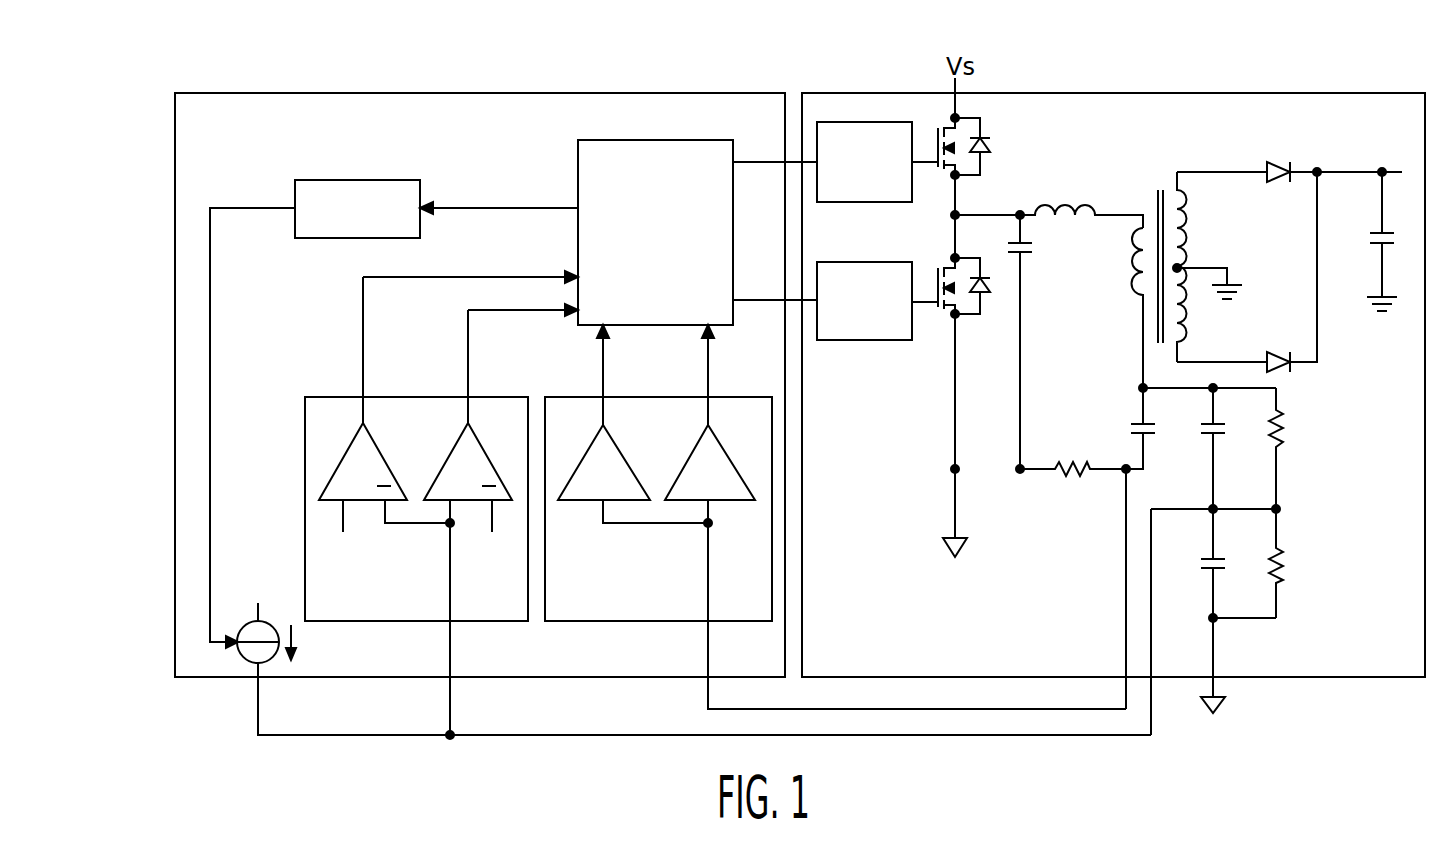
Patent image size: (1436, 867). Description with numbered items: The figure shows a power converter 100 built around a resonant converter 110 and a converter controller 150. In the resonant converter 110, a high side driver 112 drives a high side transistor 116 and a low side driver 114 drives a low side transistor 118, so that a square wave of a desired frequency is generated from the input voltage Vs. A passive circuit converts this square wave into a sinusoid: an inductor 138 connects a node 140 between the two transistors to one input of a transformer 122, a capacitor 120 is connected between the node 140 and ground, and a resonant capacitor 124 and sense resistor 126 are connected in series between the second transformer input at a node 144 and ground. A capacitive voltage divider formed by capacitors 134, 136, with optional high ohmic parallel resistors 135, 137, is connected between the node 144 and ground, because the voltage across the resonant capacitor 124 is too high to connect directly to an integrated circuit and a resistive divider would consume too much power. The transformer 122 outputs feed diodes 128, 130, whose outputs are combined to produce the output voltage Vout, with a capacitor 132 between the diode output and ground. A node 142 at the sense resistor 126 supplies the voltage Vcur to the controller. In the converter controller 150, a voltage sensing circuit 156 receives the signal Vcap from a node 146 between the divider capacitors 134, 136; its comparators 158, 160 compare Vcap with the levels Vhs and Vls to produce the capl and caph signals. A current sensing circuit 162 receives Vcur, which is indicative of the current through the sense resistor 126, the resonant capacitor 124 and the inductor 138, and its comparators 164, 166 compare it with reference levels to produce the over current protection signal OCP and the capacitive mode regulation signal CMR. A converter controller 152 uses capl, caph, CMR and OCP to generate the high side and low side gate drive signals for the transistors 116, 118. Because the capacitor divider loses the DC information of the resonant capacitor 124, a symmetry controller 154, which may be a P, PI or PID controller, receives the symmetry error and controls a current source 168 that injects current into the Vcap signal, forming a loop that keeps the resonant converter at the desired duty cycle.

The power converter 100 is at (205, 56).
The resonant converter 110 is at (1170, 93).
The high side driver 112 is at (855, 202).
The low side driver 114 is at (855, 340).
The high side transistor 116 is at (985, 138).
The low side transistor 118 is at (985, 314).
The capacitor 120 is at (1033, 250).
The transformer 122 is at (1185, 228).
The resonant capacitor 124 is at (1130, 426).
The sense resistor 126 is at (1078, 462).
The diode 128 is at (1272, 162).
The diode 130 is at (1272, 352).
The capacitor 132 is at (1370, 236).
The capacitor 134 is at (1225, 430).
The high ohmic parallel resistor 135 is at (1285, 425).
The capacitor 136 is at (1203, 568).
The high ohmic parallel resistor 137 is at (1285, 560).
The inductor 138 is at (1070, 212).
The node 140 is at (960, 215).
The sense node 142 is at (1120, 478).
The node 144 is at (1140, 385).
The node 146 is at (1210, 508).
The converter controller 150 is at (560, 93).
The converter controller 152 is at (688, 140).
The symmetry controller 154 is at (340, 180).
The voltage sensing circuit 156 is at (338, 397).
The comparator 158 is at (345, 458).
The comparator 160 is at (447, 462).
The current sensing circuit 162 is at (578, 621).
The comparator 164 is at (633, 465).
The comparator 166 is at (735, 455).
The current source 168 is at (245, 618).